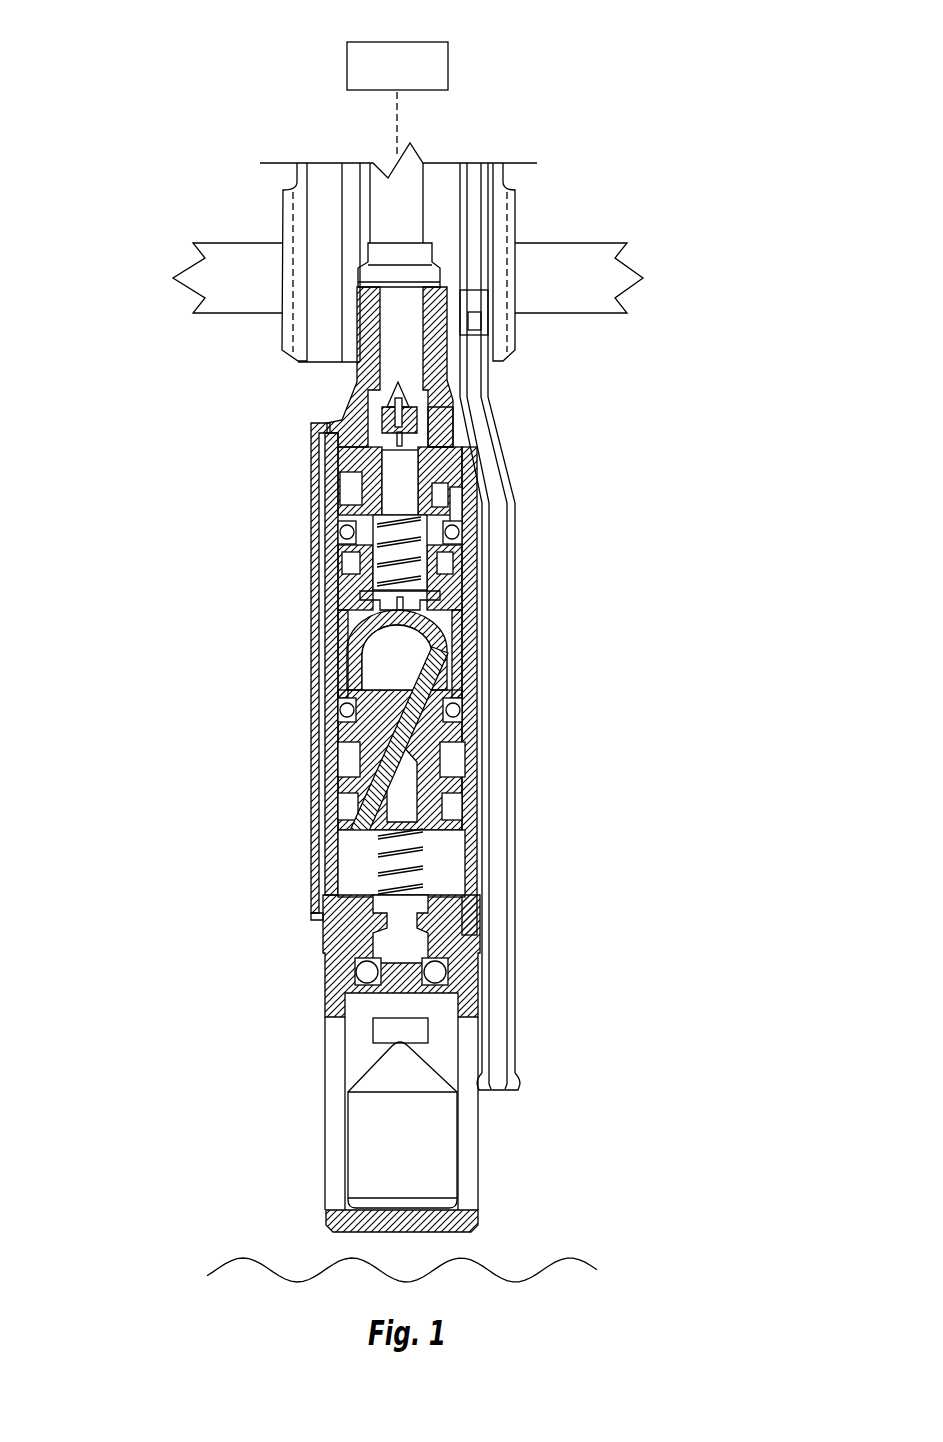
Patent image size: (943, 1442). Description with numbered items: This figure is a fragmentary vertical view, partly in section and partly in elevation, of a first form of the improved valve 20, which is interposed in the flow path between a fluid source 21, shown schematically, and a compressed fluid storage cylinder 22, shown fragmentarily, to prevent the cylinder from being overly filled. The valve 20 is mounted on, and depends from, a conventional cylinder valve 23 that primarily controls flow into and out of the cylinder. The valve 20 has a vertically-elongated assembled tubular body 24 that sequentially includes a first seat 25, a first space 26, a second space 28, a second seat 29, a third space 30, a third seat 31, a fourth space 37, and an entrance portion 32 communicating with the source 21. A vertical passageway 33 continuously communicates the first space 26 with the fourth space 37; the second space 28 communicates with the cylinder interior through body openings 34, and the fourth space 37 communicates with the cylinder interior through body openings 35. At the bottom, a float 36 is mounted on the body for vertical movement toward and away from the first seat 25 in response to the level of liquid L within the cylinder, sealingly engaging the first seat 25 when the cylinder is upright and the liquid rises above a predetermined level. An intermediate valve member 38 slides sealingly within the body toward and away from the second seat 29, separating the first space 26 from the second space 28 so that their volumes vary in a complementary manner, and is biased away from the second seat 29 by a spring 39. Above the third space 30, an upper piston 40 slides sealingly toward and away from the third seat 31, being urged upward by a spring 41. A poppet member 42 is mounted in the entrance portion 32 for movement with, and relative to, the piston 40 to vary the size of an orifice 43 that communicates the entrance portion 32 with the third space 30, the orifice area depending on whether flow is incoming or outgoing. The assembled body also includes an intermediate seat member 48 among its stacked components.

The improved valve 20 is at (340, 834).
The fluid source 21 is at (450, 41).
The compressed fluid storage cylinder 22 is at (213, 241).
The cylinder valve 23 is at (343, 160).
The tubular body 24 is at (327, 640).
The first seat 25 is at (423, 982).
The first space 26 is at (450, 867).
The second space 28 is at (430, 732).
The second seat 29 is at (430, 660).
The third space 30 is at (400, 552).
The third seat 31 is at (437, 477).
The entrance portion 32 is at (404, 347).
The vertical passageway 33 is at (318, 815).
The body openings 34 is at (478, 760).
The body openings 35 is at (475, 507).
The float 36 is at (435, 1137).
The fourth space 37 is at (440, 460).
The intermediate valve member 38 is at (340, 720).
The spring 39 is at (318, 897).
The upper piston 40 is at (353, 458).
The spring 41 is at (360, 575).
The poppet member 42 is at (420, 412).
The orifice 43 is at (405, 443).
The intermediate seat member 48 is at (360, 687).
The liquid level L is at (534, 1269).